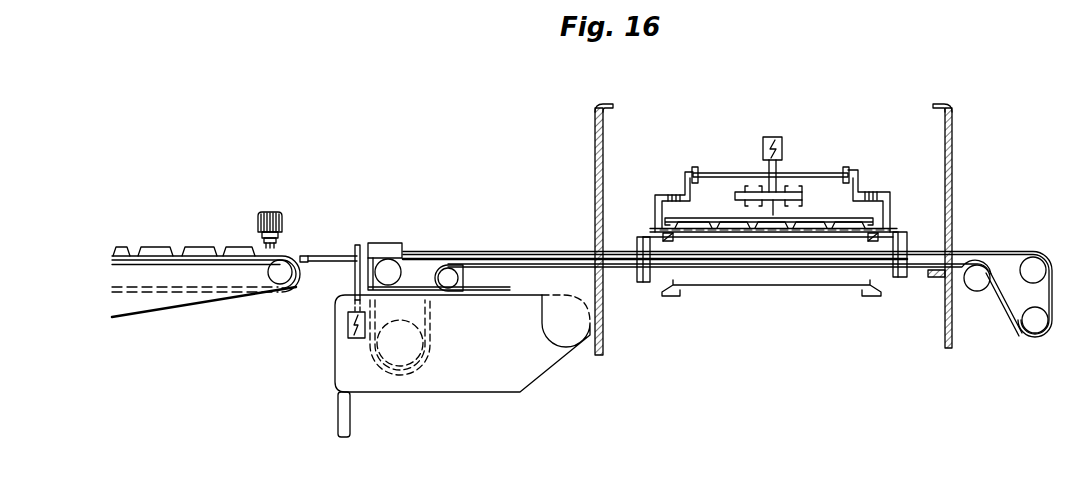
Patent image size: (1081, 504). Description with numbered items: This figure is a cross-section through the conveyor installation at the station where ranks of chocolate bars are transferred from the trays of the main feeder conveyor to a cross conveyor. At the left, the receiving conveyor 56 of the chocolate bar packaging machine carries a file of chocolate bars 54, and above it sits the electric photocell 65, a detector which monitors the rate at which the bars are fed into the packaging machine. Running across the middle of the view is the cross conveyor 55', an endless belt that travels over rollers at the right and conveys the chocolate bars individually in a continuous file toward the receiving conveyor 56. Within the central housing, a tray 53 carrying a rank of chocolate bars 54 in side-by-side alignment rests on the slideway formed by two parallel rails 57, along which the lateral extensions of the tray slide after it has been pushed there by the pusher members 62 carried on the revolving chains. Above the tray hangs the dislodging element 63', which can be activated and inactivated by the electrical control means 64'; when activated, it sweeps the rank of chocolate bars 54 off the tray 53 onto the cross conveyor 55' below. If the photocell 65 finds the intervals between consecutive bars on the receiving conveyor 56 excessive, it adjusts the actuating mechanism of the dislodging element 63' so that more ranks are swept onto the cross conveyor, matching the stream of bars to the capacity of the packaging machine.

The tray 53 is at (730, 233).
The chocolate bars 54 is at (193, 250).
The cross conveyor 55' is at (727, 273).
The receiving conveyor 56 is at (218, 248).
The rails 57 is at (668, 240).
The pusher members 62 is at (658, 215).
The dislodging element 63' is at (745, 173).
The electrical control means 64' is at (767, 129).
The electric photocell 65 is at (270, 210).